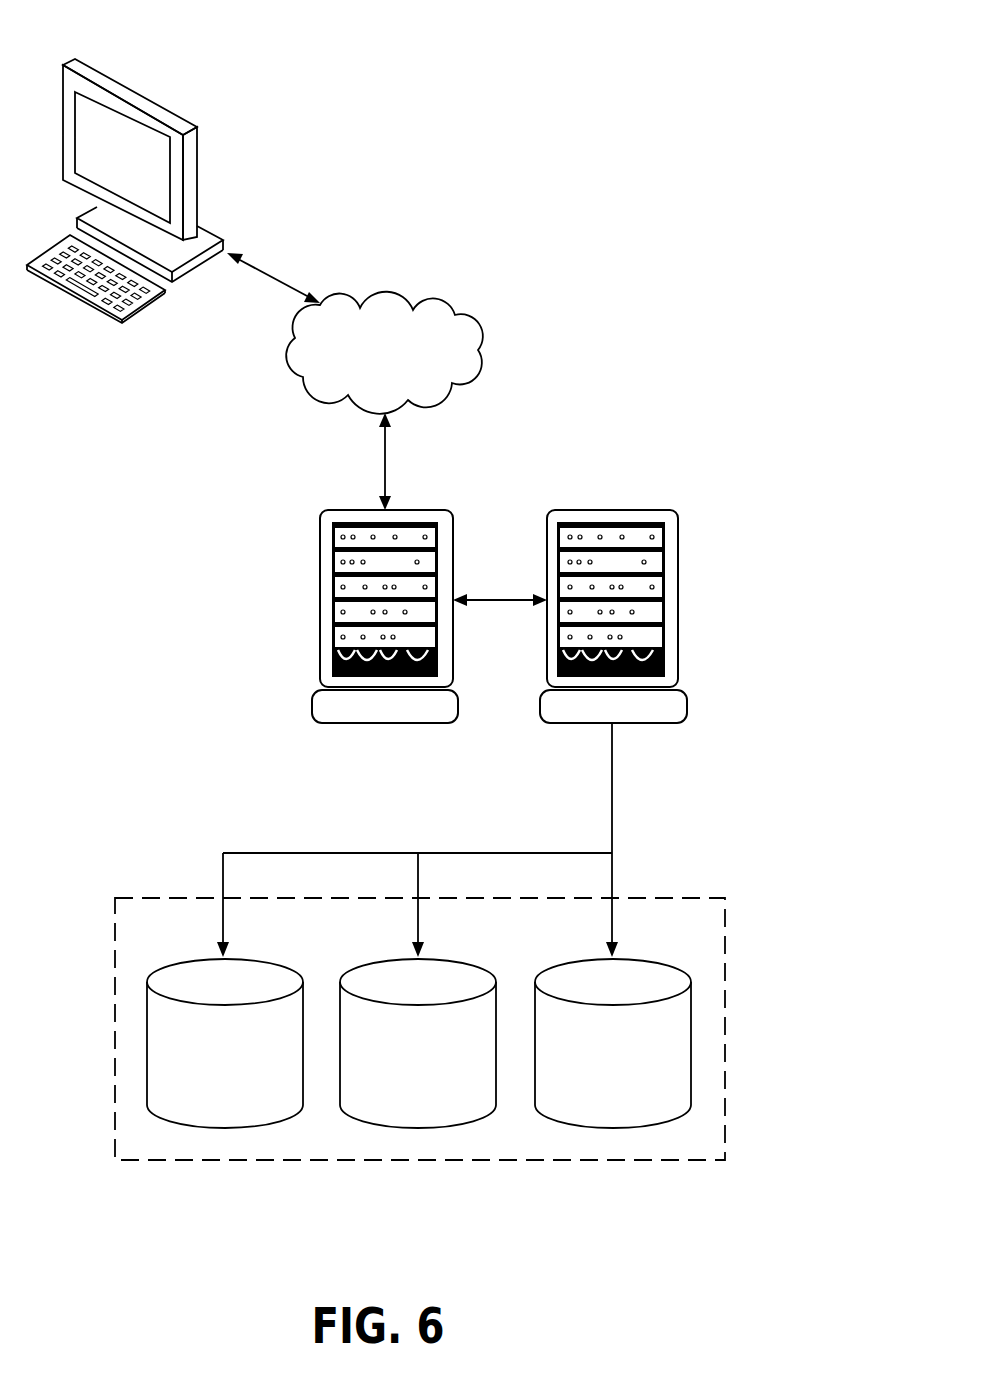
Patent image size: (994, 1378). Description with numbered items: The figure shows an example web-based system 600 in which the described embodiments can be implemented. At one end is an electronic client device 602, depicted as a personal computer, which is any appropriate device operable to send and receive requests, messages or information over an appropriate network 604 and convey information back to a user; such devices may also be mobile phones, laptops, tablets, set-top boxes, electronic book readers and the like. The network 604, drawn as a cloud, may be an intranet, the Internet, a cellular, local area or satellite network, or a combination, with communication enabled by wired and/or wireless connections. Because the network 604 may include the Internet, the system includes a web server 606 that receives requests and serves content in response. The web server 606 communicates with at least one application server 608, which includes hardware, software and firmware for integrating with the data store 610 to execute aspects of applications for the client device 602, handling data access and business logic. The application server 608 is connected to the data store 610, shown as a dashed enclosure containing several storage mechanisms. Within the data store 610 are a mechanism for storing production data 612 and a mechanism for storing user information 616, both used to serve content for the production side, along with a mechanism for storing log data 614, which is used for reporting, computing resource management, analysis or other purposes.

The system 600 is at (805, 134).
The electronic client device 602 is at (143, 97).
The network 604 is at (424, 302).
The web server 606 is at (320, 600).
The application server 608 is at (541, 706).
The data store 610 is at (151, 1162).
The production data 612 is at (225, 1128).
The log data 614 is at (420, 1128).
The user information 616 is at (613, 1128).